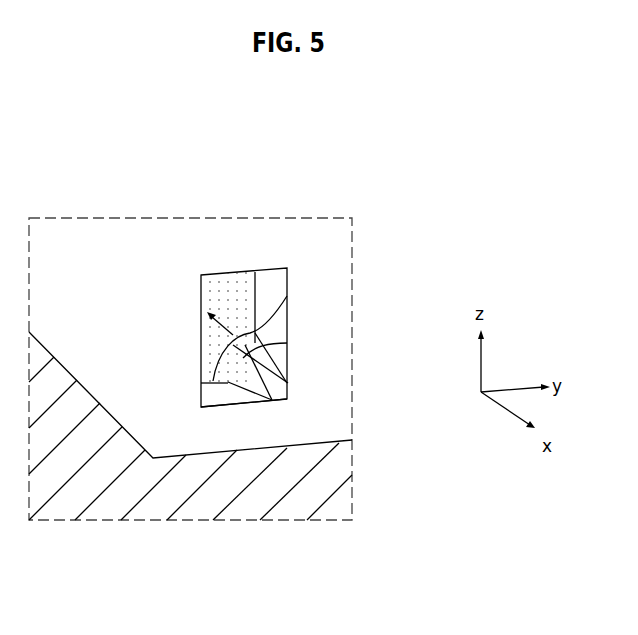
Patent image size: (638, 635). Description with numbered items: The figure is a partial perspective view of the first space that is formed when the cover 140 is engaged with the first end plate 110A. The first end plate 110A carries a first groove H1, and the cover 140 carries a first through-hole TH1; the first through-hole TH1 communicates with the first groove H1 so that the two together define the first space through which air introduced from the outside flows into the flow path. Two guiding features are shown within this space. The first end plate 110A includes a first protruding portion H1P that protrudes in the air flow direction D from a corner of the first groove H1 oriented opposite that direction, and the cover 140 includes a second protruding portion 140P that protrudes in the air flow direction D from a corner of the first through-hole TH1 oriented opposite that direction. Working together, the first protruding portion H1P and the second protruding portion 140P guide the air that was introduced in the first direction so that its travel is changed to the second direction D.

The first end plate 110A is at (305, 492).
The cover 140 is at (305, 403).
The second protruding portion 140P is at (287, 343).
The first groove H1 is at (234, 273).
The first protruding portion H1P is at (287, 296).
The first through-hole TH1 is at (229, 407).
The air flow direction D is at (220, 320).